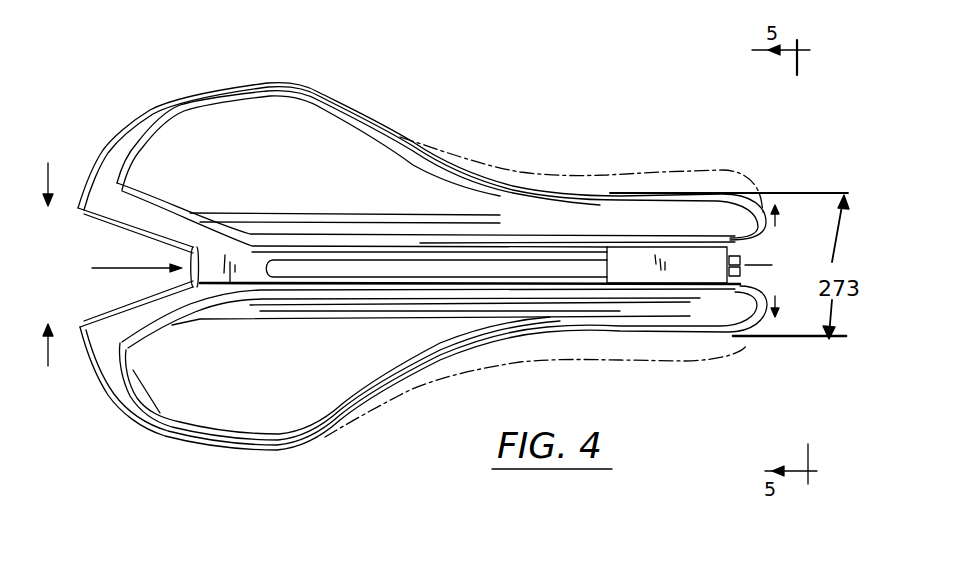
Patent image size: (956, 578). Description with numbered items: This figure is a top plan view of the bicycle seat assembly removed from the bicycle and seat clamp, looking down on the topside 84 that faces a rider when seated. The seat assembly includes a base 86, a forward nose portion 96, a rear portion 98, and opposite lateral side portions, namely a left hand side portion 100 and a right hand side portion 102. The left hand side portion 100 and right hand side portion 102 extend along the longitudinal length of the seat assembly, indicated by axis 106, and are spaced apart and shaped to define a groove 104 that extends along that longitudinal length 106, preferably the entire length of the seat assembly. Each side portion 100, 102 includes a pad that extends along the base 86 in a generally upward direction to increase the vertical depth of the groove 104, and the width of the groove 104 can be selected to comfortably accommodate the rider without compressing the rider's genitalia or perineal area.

The topside 84 is at (210, 457).
The base 86 is at (125, 212).
The nose portion 96 is at (715, 161).
The rear portion 98 is at (243, 78).
The left hand side portion 100 is at (140, 107).
The right hand side portion 102 is at (98, 382).
The groove 104 is at (505, 262).
The longitudinal axis 106 is at (758, 266).